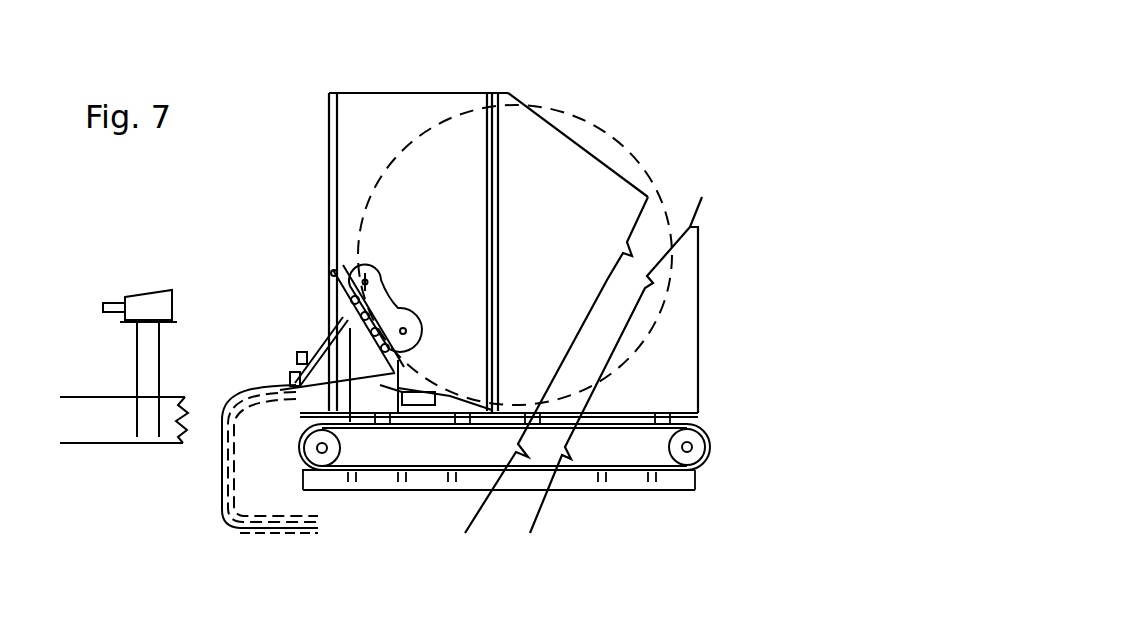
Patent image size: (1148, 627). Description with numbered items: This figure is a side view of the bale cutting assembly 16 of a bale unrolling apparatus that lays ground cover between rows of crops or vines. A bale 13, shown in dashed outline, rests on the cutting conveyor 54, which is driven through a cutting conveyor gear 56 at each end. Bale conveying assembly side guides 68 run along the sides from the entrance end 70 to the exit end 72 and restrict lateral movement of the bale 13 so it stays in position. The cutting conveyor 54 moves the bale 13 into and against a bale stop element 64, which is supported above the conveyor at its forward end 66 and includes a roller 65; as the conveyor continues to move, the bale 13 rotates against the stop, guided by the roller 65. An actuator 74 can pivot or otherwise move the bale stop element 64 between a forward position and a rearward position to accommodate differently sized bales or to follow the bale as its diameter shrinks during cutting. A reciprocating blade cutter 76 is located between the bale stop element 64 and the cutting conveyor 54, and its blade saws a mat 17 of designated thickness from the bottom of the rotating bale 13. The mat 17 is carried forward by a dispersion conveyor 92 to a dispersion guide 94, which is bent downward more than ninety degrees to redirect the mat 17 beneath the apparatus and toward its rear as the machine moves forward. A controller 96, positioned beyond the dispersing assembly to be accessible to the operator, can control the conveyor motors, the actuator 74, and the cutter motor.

The bale 13 is at (593, 120).
The bale cutting assembly 16 is at (543, 67).
The mat 17 is at (227, 525).
The cutting conveyor 54 is at (503, 417).
The cutting conveyor gear 56 is at (705, 447).
The bale stop element 64 is at (330, 297).
The roller 65 is at (385, 330).
The forward end 66 is at (400, 410).
The bale conveying assembly side guide 68 is at (590, 168).
The entrance end 70 is at (698, 328).
The exit end 72 is at (328, 185).
The actuator 74 is at (318, 340).
The reciprocating blade cutter 76 is at (435, 400).
The dispersion conveyor 92 is at (362, 423).
The dispersion guide 94 is at (226, 403).
The controller 96 is at (133, 291).